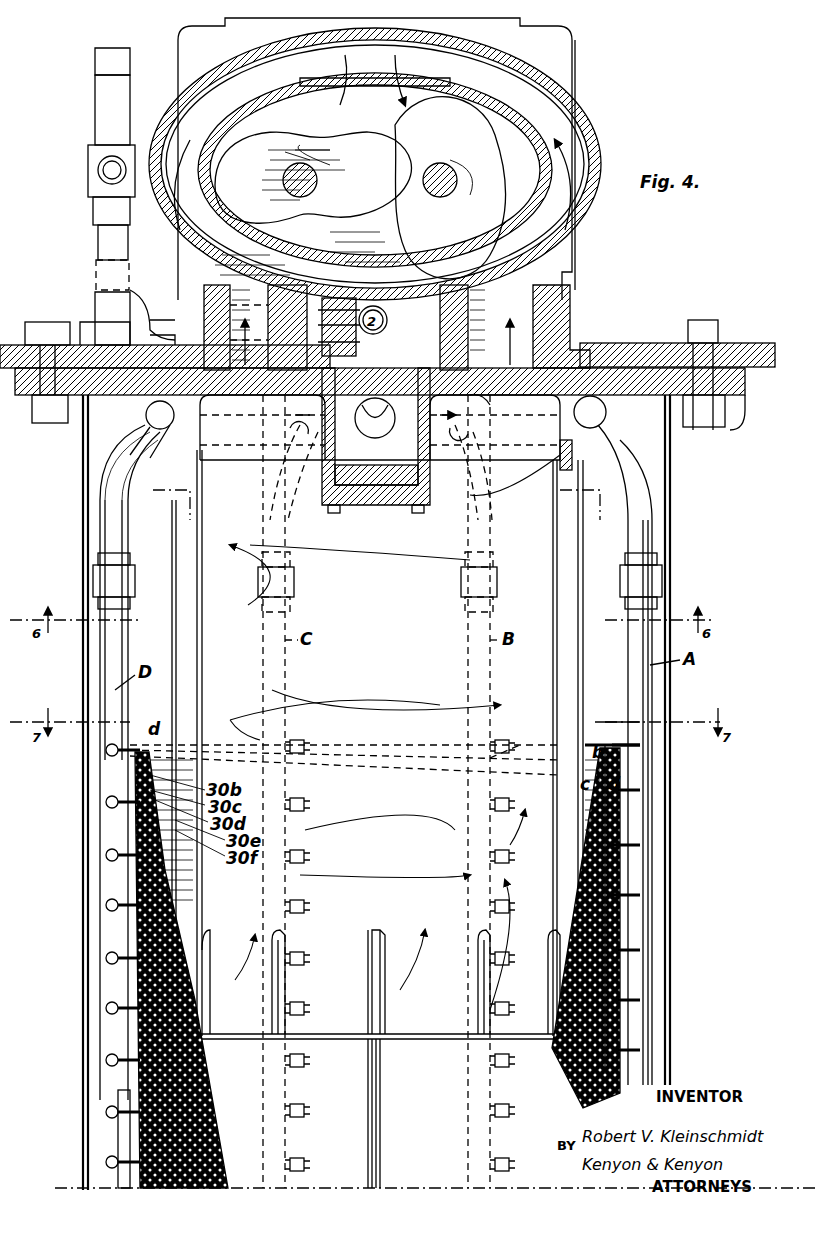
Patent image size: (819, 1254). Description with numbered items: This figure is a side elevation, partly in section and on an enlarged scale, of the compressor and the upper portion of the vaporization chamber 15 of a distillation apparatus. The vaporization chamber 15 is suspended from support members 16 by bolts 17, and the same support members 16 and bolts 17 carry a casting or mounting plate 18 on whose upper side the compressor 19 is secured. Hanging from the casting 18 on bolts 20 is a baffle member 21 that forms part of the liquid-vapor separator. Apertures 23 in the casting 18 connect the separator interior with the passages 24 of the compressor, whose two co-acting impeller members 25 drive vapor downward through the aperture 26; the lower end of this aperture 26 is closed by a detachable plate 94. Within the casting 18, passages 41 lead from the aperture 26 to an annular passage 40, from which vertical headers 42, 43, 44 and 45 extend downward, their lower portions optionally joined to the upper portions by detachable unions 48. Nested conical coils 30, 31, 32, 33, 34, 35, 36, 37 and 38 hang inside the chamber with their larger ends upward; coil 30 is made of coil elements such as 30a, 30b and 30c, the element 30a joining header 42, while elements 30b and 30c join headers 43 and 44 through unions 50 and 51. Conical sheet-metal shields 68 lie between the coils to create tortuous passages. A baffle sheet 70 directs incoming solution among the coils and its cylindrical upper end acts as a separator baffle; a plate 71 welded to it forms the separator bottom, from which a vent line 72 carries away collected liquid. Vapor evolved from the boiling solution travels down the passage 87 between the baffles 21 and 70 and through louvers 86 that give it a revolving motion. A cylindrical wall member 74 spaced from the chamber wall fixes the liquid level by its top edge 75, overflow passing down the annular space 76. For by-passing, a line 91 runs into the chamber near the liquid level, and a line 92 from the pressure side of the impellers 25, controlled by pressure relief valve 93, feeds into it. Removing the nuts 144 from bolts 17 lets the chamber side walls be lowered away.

The vaporization chamber 15 is at (672, 505).
The support members 16 is at (745, 343).
The bolts 17 is at (688, 345).
The casting or mounting plate 18 is at (595, 365).
The compressor 19 is at (578, 47).
The bolts 20 is at (575, 470).
The baffle member 21 is at (500, 485).
The apertures 23 is at (490, 369).
The passages 24 is at (560, 100).
The impeller members 25 is at (360, 188).
The aperture 26 is at (400, 355).
The conical coil 30 is at (135, 755).
The coil element 30a is at (150, 760).
The coil element 30b is at (520, 740).
The coil element 30c is at (405, 760).
The conical coil 31 is at (135, 810).
The conical coil 32 is at (135, 862).
The conical coil 33 is at (135, 912).
The conical coil 34 is at (135, 965).
The conical coil 35 is at (135, 1015).
The conical coil 36 is at (135, 1068).
The conical coil 37 is at (135, 1118).
The conical coil 38 is at (135, 1170).
The annular passage 40 is at (606, 412).
The passages 41 is at (378, 440).
The vertical header 42 is at (655, 532).
The vertical header 43 is at (470, 525).
The vertical header 44 is at (262, 520).
The vertical header 45 is at (140, 536).
The detachable unions 48 is at (150, 570).
The union 50 is at (505, 740).
The union 51 is at (300, 740).
The shields 68 is at (208, 1090).
The baffle sheet 70 is at (584, 655).
The plate 71 is at (420, 1040).
The vent line 72 is at (400, 1038).
The cylindrical wall member 74 is at (652, 790).
The top edge 75 is at (650, 718).
The annular space 76 is at (655, 920).
The louvers 86 is at (272, 980).
The passage 87 is at (560, 562).
The line 91 is at (98, 488).
The line 92 is at (246, 324).
The pressure relief valve 93 is at (100, 122).
The detachable plate 94 is at (380, 505).
The nuts 144 is at (725, 412).